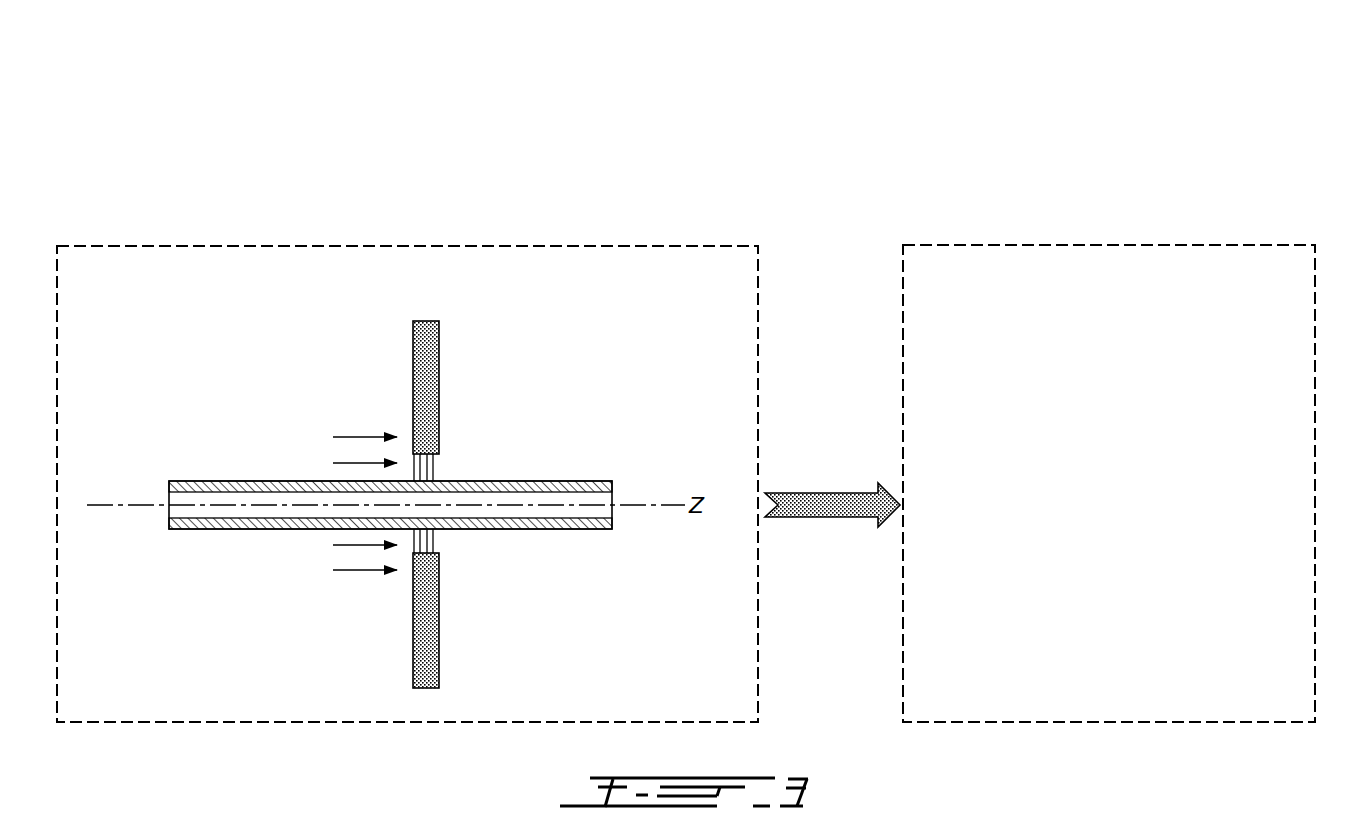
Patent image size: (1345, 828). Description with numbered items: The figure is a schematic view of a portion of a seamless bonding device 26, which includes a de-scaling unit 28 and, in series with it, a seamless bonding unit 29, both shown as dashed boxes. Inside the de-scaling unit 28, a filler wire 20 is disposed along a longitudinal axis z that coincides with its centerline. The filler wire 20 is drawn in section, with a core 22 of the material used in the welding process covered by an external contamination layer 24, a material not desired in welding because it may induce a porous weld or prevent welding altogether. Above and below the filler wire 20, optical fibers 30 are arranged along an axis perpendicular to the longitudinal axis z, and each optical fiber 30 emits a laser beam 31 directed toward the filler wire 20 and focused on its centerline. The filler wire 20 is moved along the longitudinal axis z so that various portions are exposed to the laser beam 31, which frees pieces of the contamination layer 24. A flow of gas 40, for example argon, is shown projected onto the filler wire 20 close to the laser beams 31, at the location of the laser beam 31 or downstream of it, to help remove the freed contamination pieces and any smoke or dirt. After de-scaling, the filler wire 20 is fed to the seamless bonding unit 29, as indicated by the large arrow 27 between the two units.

The filler wire 20 is at (192, 443).
The core 22 is at (390, 496).
The contamination layer 24 is at (323, 479).
The seamless bonding device 26 is at (390, 158).
The arrow 27 is at (825, 492).
The de-scaling unit 28 is at (557, 246).
The seamless bonding unit 29 is at (1043, 245).
The optical fiber 30 is at (439, 341).
The laser beam 31 is at (436, 467).
The flow of gas 40 is at (353, 436).